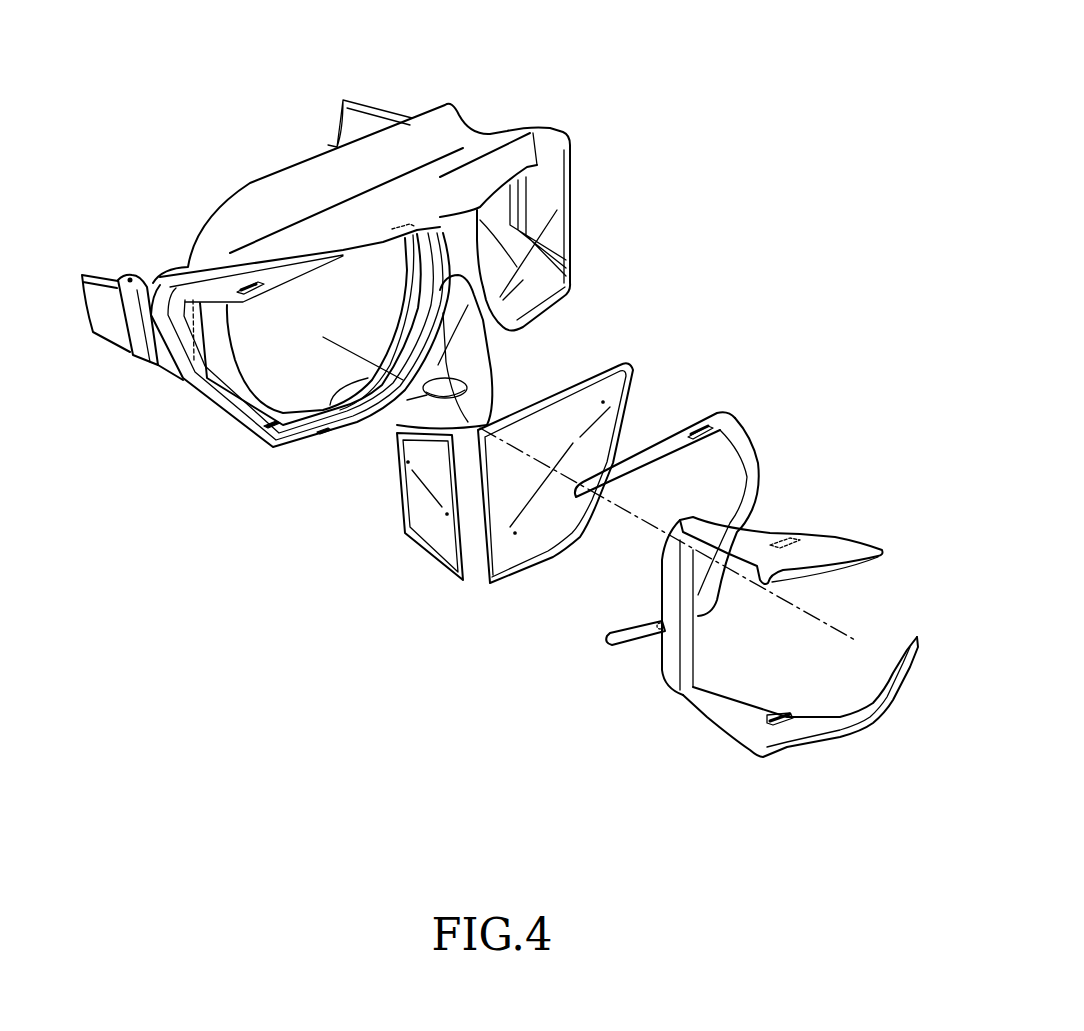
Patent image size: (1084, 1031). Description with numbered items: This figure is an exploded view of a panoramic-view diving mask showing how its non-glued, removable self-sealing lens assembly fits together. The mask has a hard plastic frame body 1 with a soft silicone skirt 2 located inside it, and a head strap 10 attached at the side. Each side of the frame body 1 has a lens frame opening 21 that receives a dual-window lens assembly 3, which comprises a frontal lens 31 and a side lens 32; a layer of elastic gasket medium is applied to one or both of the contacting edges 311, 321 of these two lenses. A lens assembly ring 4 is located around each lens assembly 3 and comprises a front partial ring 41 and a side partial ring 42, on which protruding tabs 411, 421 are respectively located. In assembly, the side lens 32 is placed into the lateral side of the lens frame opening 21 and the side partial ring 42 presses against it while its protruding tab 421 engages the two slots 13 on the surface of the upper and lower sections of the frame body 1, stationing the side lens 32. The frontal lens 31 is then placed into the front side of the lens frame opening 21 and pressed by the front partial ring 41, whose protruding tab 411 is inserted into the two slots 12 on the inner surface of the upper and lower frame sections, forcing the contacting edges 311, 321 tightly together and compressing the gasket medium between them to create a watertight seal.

The frame body 1 is at (303, 248).
The soft silicone skirt 2 is at (372, 162).
The lens assembly 3 is at (570, 217).
The head strap 10 is at (102, 292).
The slot 12 is at (413, 223).
The slot 13 is at (247, 283).
The lens frame opening 21 is at (192, 366).
The frontal lens 31 is at (520, 557).
The contacting edge 311 is at (487, 563).
The side lens 32 is at (423, 525).
The contacting edge 321 is at (453, 537).
The lens assembly ring 4 is at (773, 393).
The front partial ring 41 is at (668, 440).
The protruding tab 411 is at (707, 417).
The side partial ring 42 is at (727, 727).
The protruding tab 421 is at (793, 533).